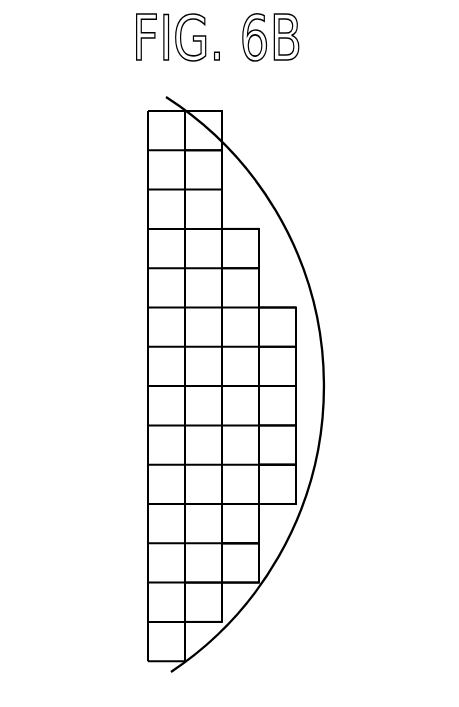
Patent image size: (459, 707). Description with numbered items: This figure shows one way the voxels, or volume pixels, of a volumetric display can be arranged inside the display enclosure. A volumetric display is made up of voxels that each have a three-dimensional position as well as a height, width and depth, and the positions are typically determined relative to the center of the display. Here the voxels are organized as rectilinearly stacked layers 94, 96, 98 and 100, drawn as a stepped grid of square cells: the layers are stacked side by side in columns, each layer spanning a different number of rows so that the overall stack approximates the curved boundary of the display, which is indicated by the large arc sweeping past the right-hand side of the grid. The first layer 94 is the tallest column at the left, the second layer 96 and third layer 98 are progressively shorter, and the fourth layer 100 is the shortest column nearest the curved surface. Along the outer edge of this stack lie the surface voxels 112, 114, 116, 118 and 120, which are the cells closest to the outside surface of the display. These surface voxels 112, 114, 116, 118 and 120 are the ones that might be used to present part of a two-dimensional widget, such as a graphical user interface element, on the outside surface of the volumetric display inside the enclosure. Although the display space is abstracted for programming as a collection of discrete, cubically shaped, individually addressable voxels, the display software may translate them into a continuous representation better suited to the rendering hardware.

The rectilinearly stacked layer 94 is at (163, 111).
The rectilinearly stacked layer 96 is at (199, 149).
The rectilinearly stacked layer 98 is at (243, 228).
The rectilinearly stacked layer 100 is at (283, 308).
The surface voxel 112 is at (297, 440).
The surface voxel 114 is at (297, 487).
The surface voxel 116 is at (248, 525).
The surface voxel 118 is at (250, 570).
The surface voxel 120 is at (215, 603).